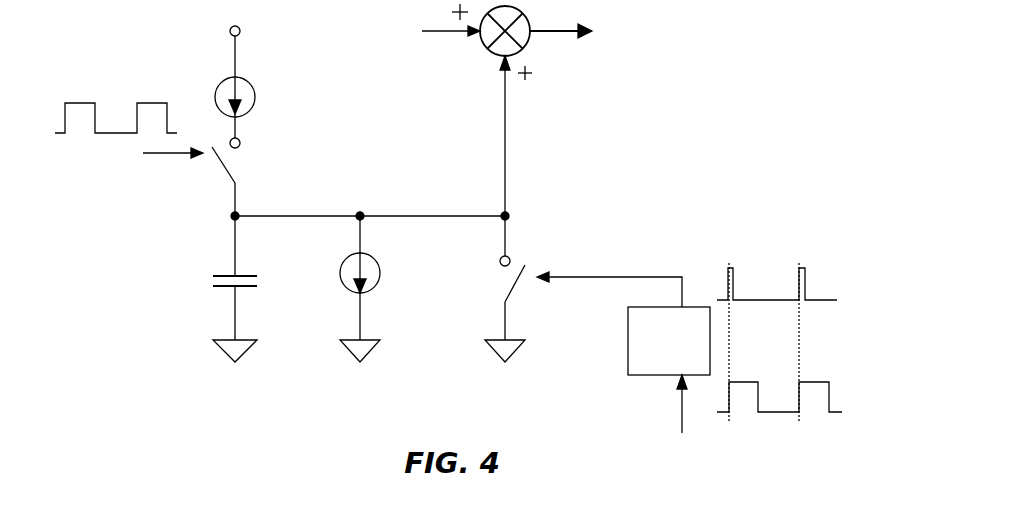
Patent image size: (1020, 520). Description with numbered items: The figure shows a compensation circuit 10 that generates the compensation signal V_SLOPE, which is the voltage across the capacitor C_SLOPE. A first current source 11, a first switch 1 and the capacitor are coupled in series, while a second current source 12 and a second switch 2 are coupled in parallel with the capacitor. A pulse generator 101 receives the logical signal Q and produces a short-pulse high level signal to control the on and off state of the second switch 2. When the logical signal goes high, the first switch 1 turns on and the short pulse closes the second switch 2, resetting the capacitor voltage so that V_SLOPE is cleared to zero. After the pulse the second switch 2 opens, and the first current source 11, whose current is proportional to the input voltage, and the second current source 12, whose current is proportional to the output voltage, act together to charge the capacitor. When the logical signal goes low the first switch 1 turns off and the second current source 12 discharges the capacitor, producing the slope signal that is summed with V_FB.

The compensation circuit 10 is at (105, 50).
The pulse generator 101 is at (631, 384).
The first current source 11 is at (256, 87).
The second current source 12 is at (378, 289).
The first switch 1 is at (238, 181).
The second switch 2 is at (496, 289).